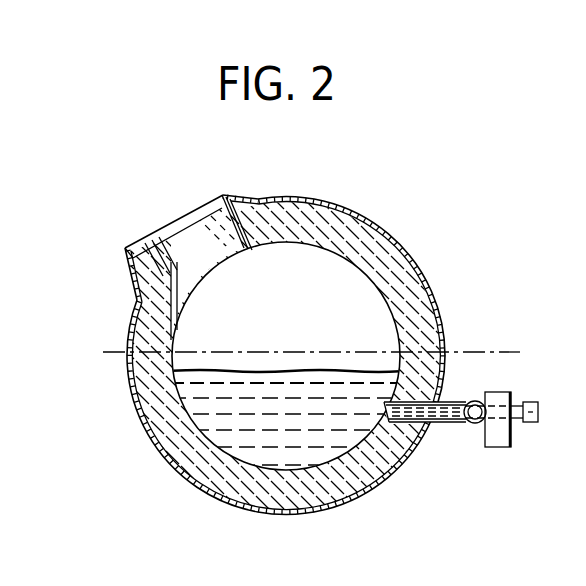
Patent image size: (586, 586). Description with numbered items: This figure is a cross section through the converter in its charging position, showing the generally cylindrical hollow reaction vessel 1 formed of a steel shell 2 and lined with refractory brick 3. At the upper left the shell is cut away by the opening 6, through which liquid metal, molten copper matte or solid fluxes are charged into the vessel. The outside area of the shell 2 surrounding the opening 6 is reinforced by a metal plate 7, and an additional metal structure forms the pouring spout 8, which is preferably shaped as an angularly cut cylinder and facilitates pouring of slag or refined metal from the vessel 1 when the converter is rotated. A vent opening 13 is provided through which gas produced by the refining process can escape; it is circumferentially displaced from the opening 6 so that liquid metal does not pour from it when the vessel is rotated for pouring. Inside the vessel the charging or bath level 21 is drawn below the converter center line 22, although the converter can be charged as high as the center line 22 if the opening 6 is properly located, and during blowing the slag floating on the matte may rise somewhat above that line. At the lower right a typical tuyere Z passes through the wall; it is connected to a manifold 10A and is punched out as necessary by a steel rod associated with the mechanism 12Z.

The reaction vessel 1 is at (349, 207).
The steel shell 2 is at (145, 431).
The refractory brick 3 is at (387, 472).
The opening 6 is at (189, 247).
The metal plate 7 is at (265, 198).
The pouring spout 8 is at (226, 195).
The manifold 10A is at (475, 423).
The mechanism 12Z is at (516, 390).
The vent opening 13 is at (406, 308).
The bath level 21 is at (268, 370).
The center line 22 is at (322, 352).
The tuyere Z is at (447, 402).